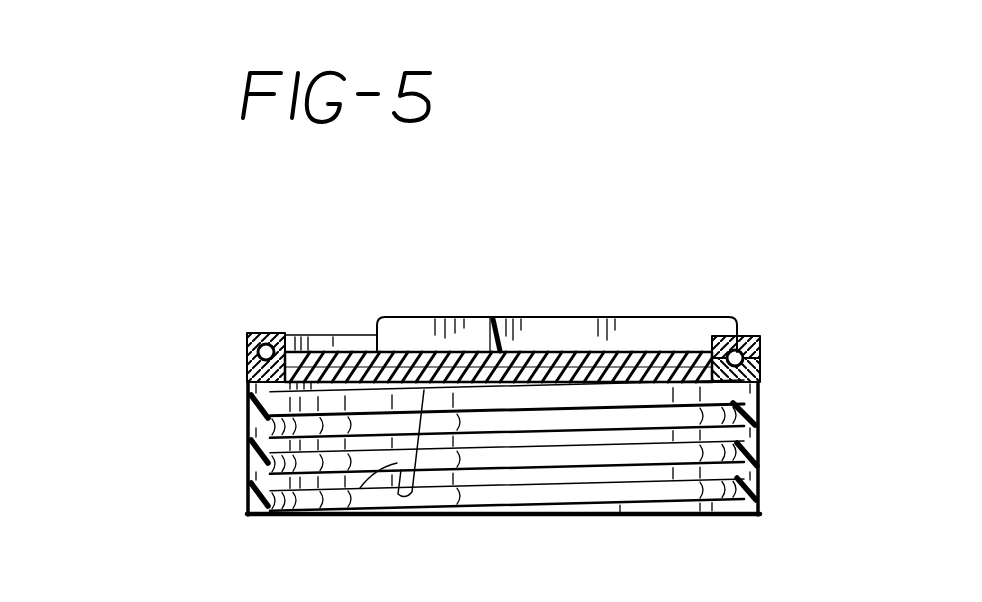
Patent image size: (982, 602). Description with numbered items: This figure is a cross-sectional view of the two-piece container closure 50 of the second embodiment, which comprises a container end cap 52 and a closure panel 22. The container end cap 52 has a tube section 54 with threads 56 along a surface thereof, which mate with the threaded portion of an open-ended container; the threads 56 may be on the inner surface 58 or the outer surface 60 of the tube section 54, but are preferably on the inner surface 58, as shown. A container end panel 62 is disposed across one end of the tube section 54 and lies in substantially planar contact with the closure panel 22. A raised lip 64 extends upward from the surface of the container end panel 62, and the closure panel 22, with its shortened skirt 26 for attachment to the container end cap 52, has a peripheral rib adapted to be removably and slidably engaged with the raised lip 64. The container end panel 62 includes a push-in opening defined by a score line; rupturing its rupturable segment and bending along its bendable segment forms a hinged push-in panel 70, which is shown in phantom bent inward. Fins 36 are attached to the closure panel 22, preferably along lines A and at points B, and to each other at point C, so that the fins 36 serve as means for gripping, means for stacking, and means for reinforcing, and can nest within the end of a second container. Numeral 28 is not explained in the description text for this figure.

The closure panel 22 is at (250, 352).
The shortened skirt 26 is at (758, 357).
The cap flange 28 is at (757, 325).
The fins 36 is at (377, 317).
The container closure 50 is at (103, 347).
The container end cap 52 is at (166, 388).
The tube section 54 is at (250, 458).
The threads 56 is at (563, 493).
The inner surface 58 is at (737, 428).
The outer surface 60 is at (760, 437).
The container end panel 62 is at (250, 400).
The raised lip 64 is at (267, 344).
The push-in panel 70 is at (410, 392).
The lines A is at (422, 345).
The points B is at (393, 335).
The point C is at (495, 318).